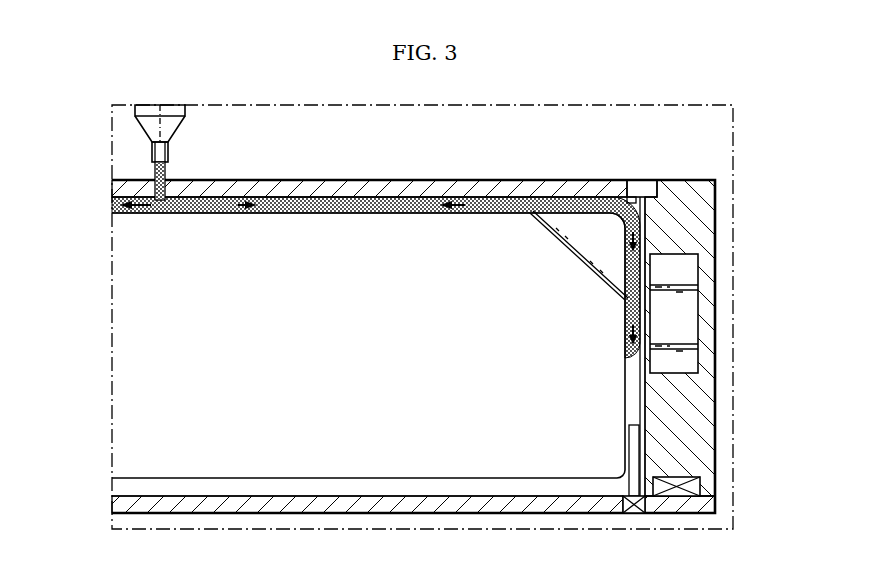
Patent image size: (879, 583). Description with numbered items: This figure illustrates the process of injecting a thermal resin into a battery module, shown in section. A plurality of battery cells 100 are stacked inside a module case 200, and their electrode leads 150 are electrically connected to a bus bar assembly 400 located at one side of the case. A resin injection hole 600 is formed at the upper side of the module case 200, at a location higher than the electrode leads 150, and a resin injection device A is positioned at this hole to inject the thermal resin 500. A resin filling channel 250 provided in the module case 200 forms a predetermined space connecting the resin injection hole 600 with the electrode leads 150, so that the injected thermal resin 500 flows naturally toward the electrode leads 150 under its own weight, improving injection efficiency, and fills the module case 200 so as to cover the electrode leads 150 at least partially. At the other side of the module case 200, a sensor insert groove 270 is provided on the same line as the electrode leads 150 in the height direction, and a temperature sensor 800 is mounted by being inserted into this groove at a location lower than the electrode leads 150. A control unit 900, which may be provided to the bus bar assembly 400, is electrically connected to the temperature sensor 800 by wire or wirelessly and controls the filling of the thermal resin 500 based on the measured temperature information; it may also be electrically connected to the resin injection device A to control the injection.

The battery cell 100 is at (122, 355).
The electrode lead 150 is at (685, 312).
The module case 200 is at (118, 189).
The resin filling channel 250 is at (638, 203).
The sensor insert groove 270 is at (629, 513).
The bus bar assembly 400 is at (722, 355).
The thermal resin 500 is at (118, 208).
The resin injection hole 600 is at (156, 170).
The temperature sensor 800 is at (636, 513).
The control unit 900 is at (700, 483).
The resin injection device A is at (180, 121).